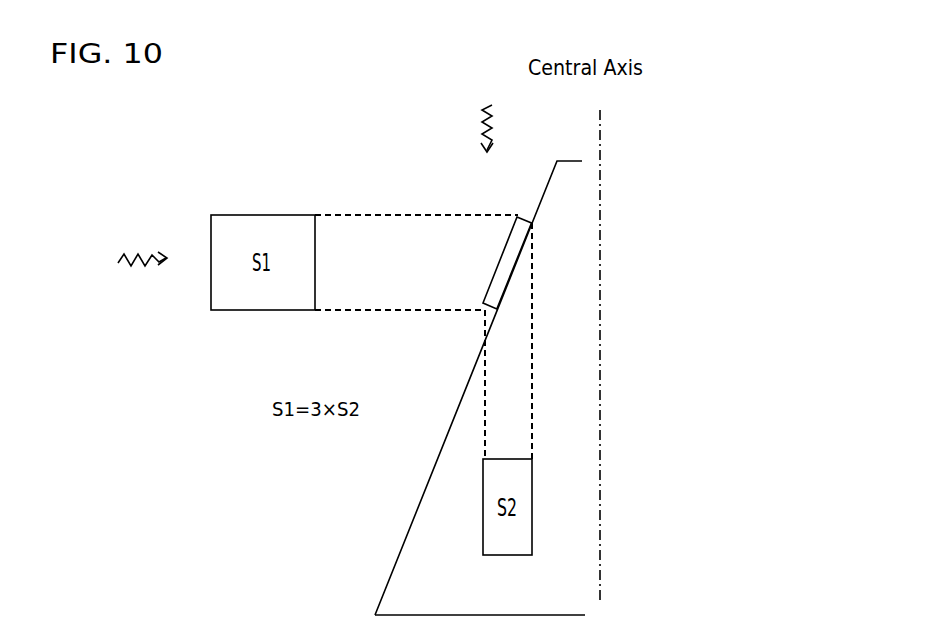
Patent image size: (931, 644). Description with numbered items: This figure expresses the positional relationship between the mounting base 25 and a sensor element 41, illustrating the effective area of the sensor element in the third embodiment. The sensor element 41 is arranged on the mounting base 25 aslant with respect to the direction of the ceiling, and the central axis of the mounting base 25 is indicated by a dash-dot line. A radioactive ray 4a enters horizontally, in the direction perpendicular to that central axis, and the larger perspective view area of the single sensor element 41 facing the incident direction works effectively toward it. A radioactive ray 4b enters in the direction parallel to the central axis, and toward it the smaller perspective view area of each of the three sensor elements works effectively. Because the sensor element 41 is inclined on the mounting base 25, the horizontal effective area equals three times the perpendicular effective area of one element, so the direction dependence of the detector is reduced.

The radioactive ray 4a is at (149, 238).
The radioactive ray 4b is at (475, 133).
The sensor element 41 is at (497, 266).
The mounting base 25 is at (420, 503).